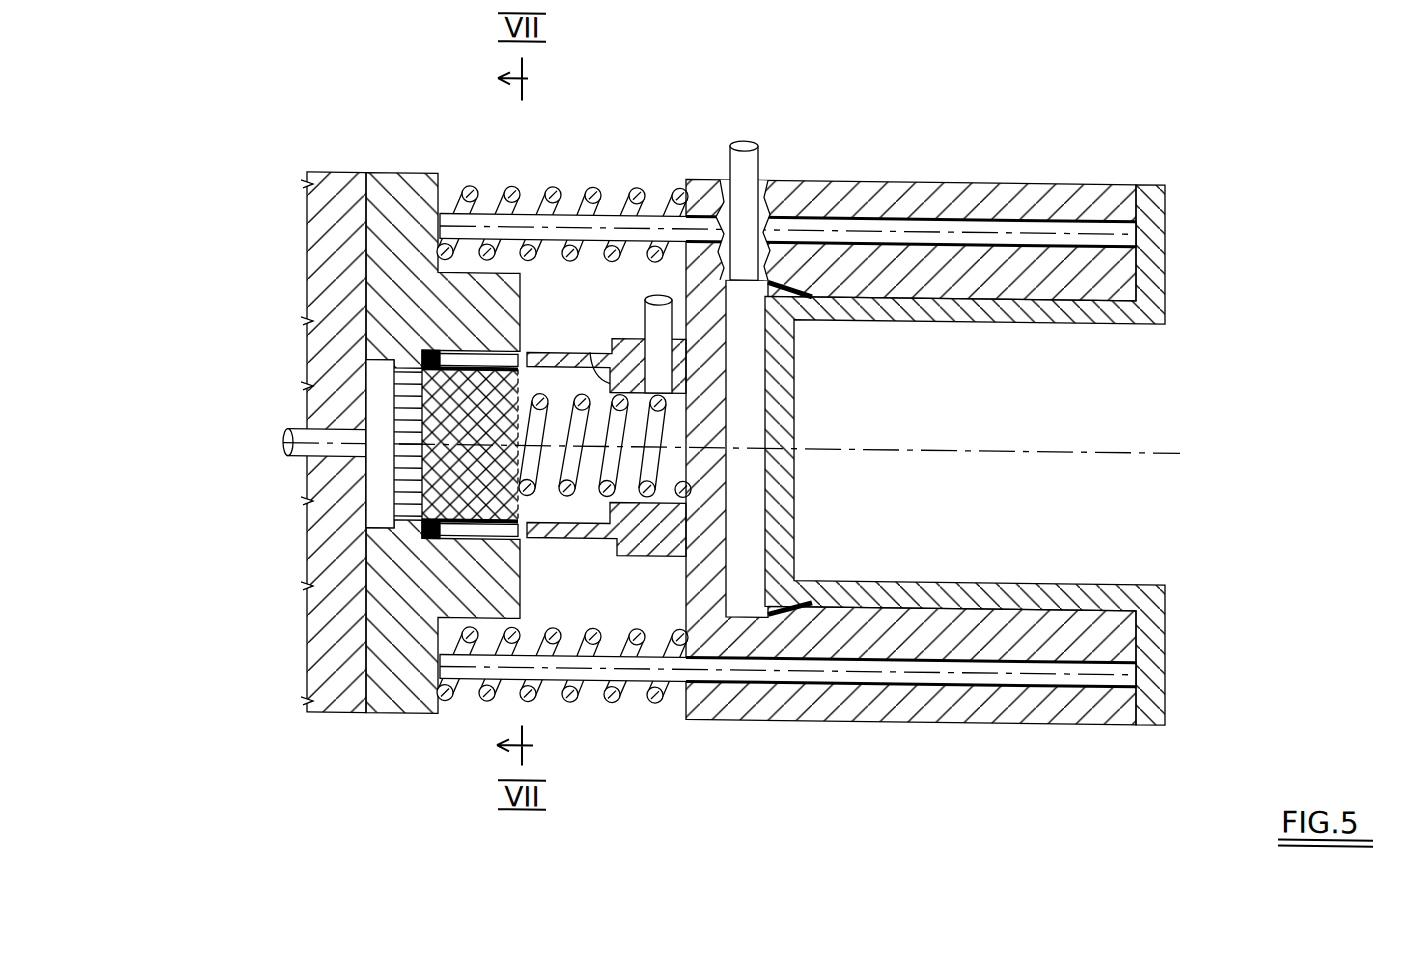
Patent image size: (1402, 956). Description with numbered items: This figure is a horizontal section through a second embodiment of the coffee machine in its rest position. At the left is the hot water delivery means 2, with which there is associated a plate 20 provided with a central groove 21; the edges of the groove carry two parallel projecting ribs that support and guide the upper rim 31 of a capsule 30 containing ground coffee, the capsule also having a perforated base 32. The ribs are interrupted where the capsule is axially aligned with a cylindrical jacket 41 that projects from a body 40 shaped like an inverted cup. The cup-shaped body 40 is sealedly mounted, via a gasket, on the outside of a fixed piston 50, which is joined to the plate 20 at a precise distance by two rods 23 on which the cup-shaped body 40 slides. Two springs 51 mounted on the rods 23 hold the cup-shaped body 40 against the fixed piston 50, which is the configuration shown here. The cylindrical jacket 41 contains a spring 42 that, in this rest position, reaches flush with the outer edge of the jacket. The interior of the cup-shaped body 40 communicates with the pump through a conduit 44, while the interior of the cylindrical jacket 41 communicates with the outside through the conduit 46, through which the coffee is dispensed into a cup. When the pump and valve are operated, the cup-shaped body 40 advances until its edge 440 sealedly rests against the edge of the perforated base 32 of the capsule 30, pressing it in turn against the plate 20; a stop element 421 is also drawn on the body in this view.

The hot water delivery means 2 is at (342, 176).
The plate 20 is at (400, 175).
The central groove 21 is at (290, 430).
The rods 23 is at (1035, 226).
The capsule 30 is at (455, 483).
The upper rim 31 is at (420, 352).
The perforated base 32 is at (510, 402).
The cup-shaped body 40 is at (930, 176).
The cylindrical jacket 41 is at (555, 350).
The spring 42 is at (565, 490).
The conduit 44 is at (745, 138).
The conduit 46 is at (656, 295).
The fixed piston 50 is at (900, 316).
The springs 51 is at (470, 190).
The stopper 421 is at (790, 284).
The edge 440 is at (590, 350).